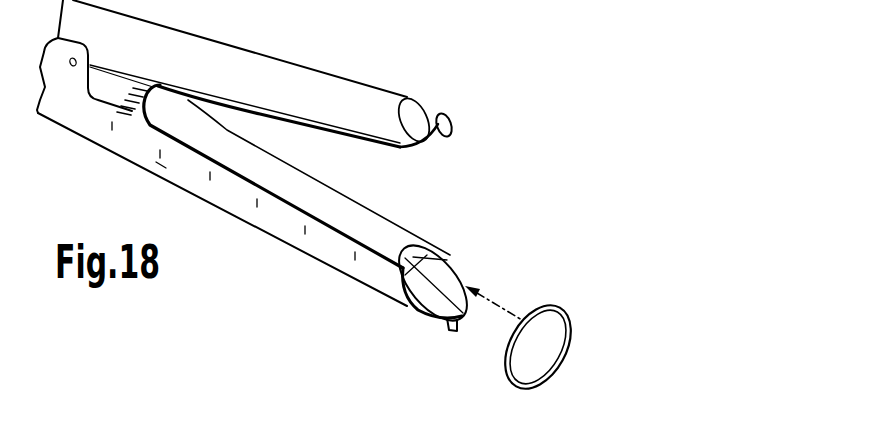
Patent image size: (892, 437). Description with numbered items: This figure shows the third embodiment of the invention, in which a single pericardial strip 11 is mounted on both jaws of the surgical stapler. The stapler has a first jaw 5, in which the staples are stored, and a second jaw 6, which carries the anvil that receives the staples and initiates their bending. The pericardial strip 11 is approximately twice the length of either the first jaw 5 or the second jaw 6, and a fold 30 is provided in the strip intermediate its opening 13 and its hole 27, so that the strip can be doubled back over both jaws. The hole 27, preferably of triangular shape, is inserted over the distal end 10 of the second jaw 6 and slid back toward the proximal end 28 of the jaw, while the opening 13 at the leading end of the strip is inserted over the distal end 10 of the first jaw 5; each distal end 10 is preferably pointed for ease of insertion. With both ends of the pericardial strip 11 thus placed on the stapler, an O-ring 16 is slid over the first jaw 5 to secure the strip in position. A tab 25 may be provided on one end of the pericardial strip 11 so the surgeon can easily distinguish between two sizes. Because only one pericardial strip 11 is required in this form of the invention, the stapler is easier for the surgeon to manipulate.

The first jaw 5 is at (257, 222).
The second jaw 6 is at (263, 73).
The distal end 10 is at (447, 140).
The pericardial strip 11 is at (331, 150).
The opening 13 is at (407, 97).
The O-ring 16 is at (566, 320).
The tab 25 is at (452, 332).
The hole 27 is at (453, 256).
The proximal end 28 is at (160, 165).
The fold 30 is at (117, 113).